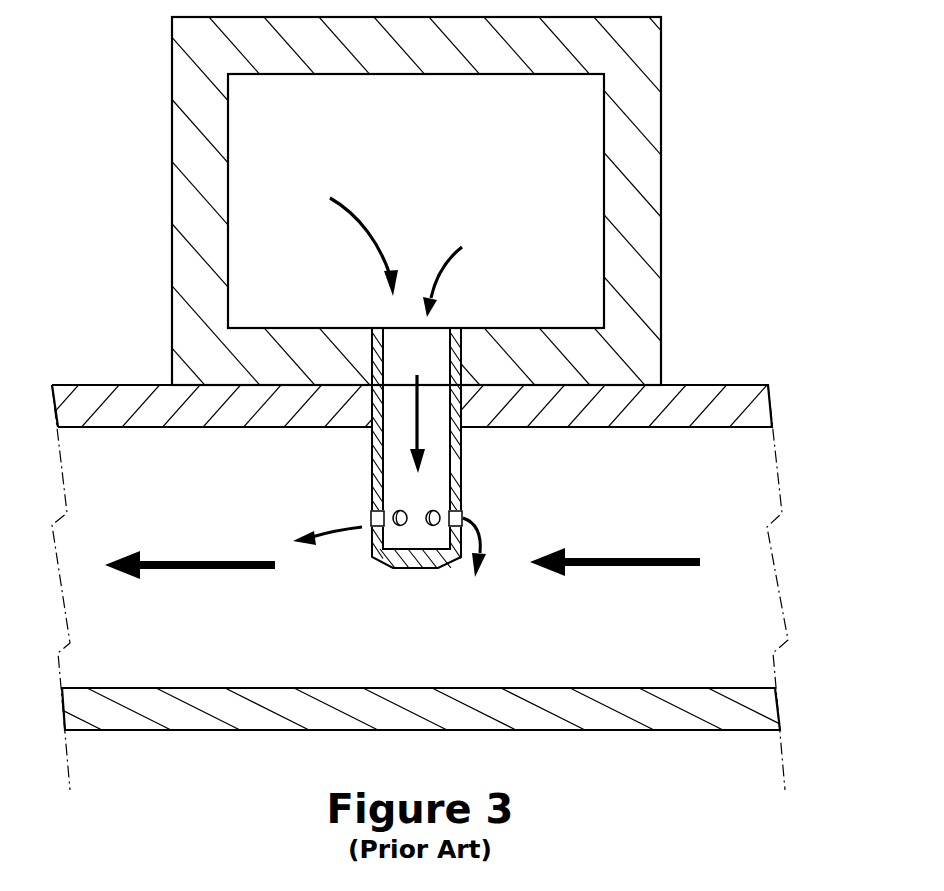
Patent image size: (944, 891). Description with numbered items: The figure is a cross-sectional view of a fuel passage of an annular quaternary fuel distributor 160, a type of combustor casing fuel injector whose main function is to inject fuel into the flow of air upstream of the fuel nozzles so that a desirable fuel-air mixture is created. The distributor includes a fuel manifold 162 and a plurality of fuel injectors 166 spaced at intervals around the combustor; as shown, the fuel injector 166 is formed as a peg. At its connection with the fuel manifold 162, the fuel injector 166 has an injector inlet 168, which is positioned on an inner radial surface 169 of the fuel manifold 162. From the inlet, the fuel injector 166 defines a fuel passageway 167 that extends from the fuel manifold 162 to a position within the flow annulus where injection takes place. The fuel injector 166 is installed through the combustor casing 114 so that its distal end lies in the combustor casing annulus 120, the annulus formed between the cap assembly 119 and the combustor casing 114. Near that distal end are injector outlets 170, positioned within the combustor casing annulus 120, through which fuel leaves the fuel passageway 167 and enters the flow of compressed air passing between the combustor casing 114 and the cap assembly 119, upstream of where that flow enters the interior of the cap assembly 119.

The annular quaternary fuel distributor 160 is at (680, 92).
The fuel manifold 162 is at (353, 144).
The injector inlet 168 is at (408, 327).
The inner radial surface 169 is at (552, 327).
The combustor casing 114 is at (168, 410).
The combustor casing annulus 120 is at (197, 642).
The cap assembly 119 is at (292, 710).
The fuel injector 166 is at (360, 445).
The fuel passageway 167 is at (432, 437).
The injector outlets 170 is at (468, 509).